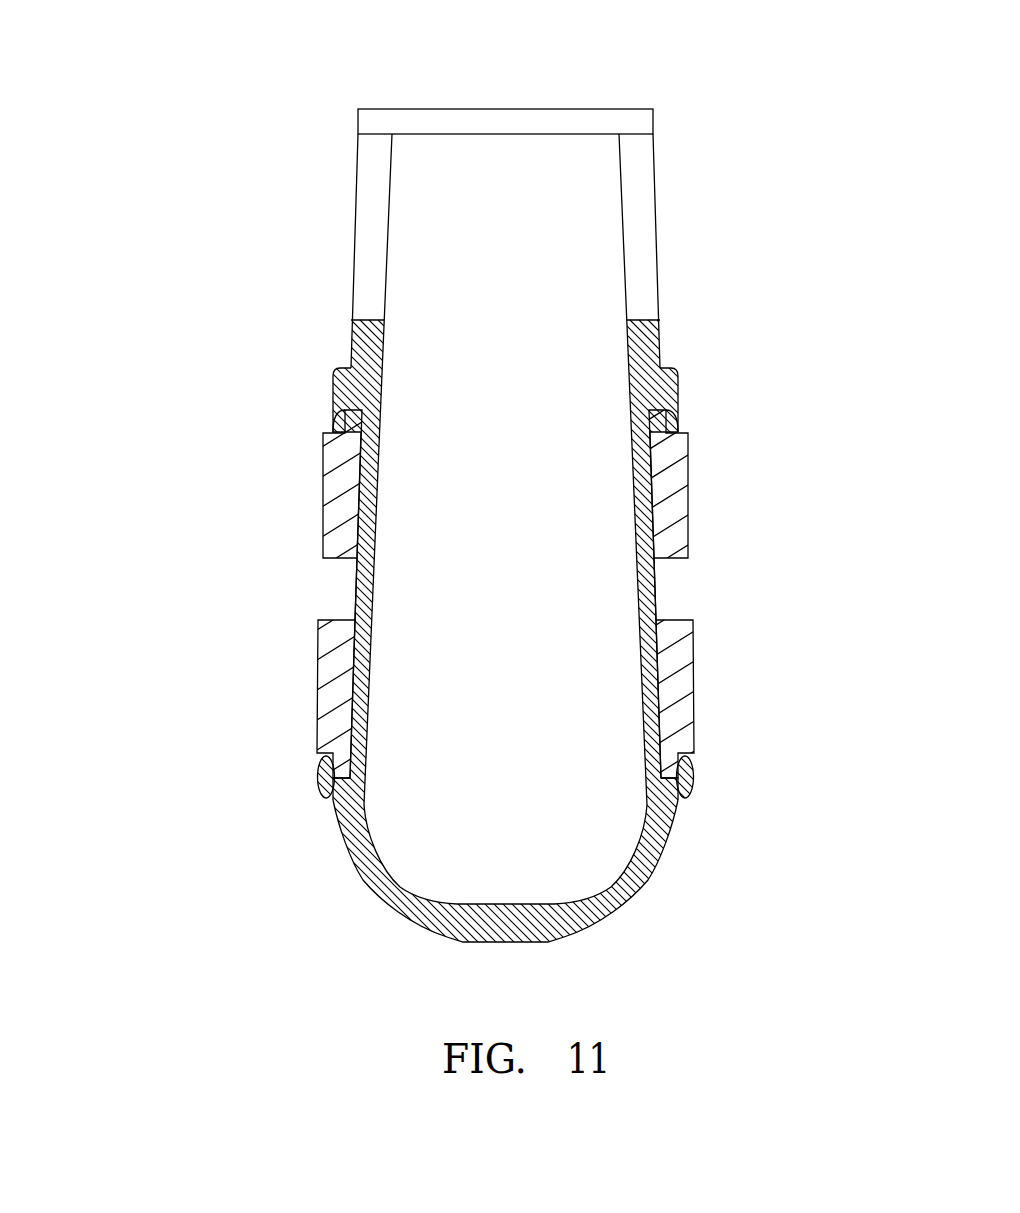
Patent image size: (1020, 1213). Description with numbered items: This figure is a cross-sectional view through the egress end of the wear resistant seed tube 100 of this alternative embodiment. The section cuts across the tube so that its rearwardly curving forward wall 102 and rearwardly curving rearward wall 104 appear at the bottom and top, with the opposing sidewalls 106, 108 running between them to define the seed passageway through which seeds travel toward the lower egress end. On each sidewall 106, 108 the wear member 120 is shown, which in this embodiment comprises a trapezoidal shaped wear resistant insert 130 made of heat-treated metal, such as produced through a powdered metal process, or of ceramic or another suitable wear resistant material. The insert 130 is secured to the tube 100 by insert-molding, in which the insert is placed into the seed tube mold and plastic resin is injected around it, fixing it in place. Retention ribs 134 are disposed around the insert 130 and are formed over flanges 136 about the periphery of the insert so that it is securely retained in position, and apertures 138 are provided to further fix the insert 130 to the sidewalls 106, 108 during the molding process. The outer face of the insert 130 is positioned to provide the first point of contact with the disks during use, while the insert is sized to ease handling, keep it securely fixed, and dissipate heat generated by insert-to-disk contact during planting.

The wear resistant seed tube 100 is at (510, 491).
The forward wall 102 is at (465, 918).
The rearward wall 104 is at (522, 108).
The sidewall 106 is at (353, 272).
The sidewall 108 is at (650, 250).
The wear member 120 is at (431, 637).
The wear resistant insert 130 is at (330, 663).
The retention ribs 134 is at (345, 382).
The flanges 136 is at (342, 412).
The apertures 138 is at (340, 585).